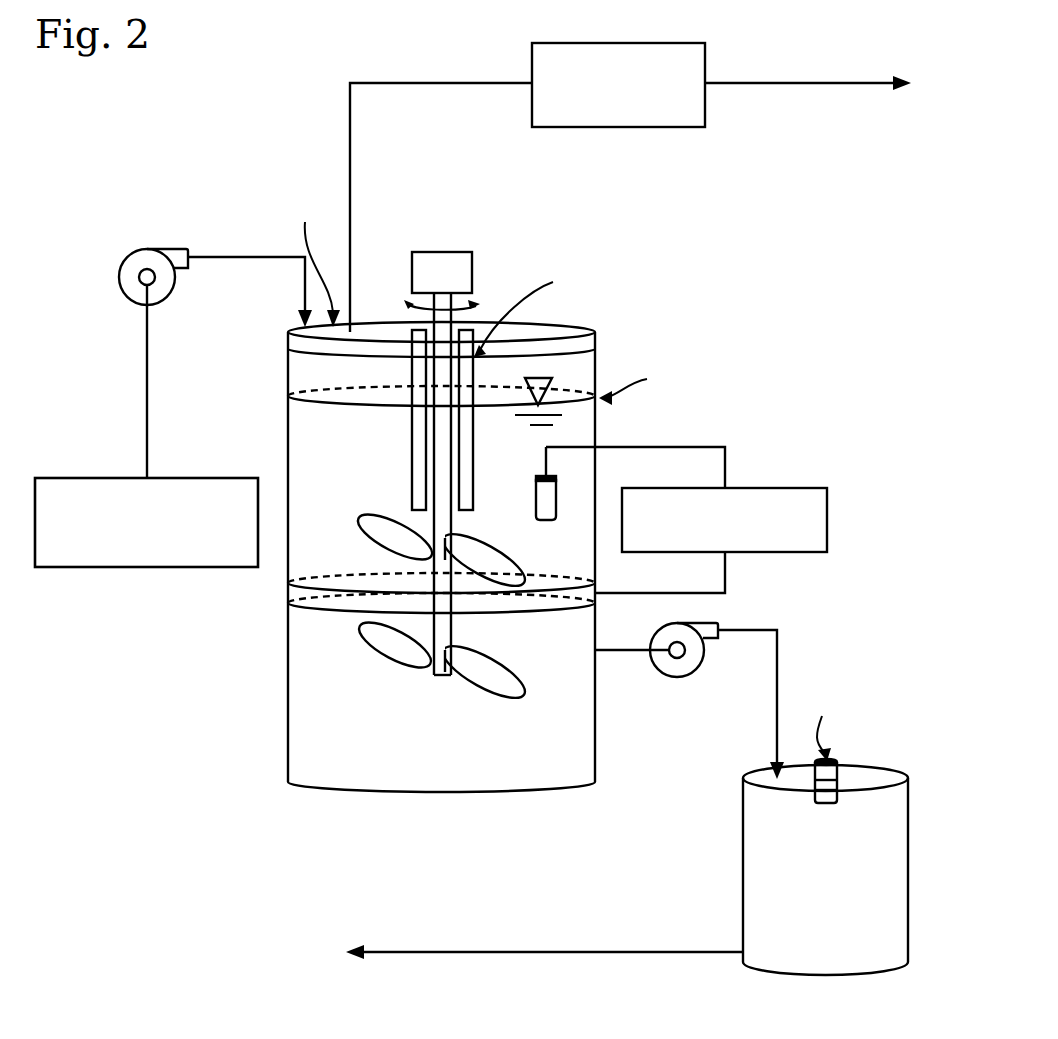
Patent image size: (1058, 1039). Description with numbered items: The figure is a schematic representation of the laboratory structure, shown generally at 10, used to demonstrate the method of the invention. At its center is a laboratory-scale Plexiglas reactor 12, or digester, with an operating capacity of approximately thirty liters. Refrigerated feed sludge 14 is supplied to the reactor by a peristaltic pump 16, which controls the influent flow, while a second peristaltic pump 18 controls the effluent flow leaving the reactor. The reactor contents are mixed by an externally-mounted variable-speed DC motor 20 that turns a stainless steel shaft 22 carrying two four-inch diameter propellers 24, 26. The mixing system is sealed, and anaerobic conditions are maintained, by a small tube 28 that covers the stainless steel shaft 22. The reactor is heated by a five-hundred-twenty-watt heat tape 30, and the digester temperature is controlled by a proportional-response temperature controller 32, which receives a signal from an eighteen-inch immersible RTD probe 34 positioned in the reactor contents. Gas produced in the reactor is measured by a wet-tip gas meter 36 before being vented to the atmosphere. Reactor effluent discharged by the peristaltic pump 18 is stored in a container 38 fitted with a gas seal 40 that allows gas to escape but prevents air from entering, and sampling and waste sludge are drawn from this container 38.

The test structure 10 is at (180, 750).
The Plexiglas reactor 12 is at (287, 708).
The refrigerated feed sludge 14 is at (213, 478).
The peristaltic pump 16 is at (120, 278).
The peristaltic pump 18 is at (708, 622).
The variable-speed DC motor 20 is at (473, 272).
The stainless steel shaft 22 is at (440, 466).
The propeller 24 is at (393, 515).
The propeller 26 is at (390, 666).
The tube 28 is at (475, 468).
The heat tape 30 is at (500, 614).
The temperature controller 32 is at (783, 488).
The RTD probe 34 is at (535, 503).
The wet-tip gas meter 36 is at (660, 43).
The container 38 is at (743, 804).
The gas seal 40 is at (840, 770).